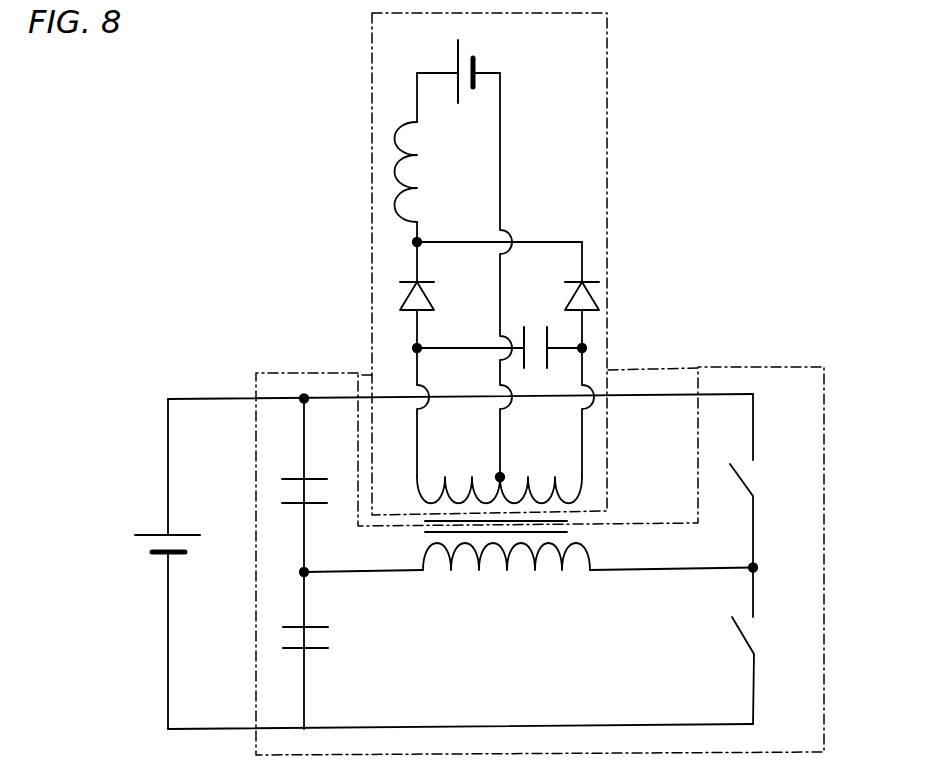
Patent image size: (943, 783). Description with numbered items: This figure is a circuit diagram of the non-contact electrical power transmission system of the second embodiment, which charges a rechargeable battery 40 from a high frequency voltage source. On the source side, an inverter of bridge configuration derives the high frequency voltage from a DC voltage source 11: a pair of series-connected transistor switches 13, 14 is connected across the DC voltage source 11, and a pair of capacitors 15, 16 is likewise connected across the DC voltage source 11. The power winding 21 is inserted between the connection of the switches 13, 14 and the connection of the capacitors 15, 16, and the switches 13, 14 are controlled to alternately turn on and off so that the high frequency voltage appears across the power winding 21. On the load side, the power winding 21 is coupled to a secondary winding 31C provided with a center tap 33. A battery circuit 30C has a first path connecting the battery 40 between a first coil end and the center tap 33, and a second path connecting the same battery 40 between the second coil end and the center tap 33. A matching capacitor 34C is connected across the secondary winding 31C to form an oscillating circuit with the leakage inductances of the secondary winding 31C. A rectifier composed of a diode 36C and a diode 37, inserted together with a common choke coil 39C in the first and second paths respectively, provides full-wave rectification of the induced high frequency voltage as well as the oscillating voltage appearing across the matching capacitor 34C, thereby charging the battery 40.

The DC voltage source 11 is at (138, 546).
The transistor switch 13 is at (755, 475).
The transistor switch 14 is at (755, 633).
The capacitor 15 is at (282, 490).
The capacitor 16 is at (282, 637).
The power winding 21 is at (522, 569).
The battery circuit 30C is at (502, 157).
The secondary winding 31C is at (568, 478).
The center tap 33 is at (497, 473).
The matching capacitor 34C is at (535, 322).
The diode 36C is at (395, 300).
The diode 37 is at (600, 293).
The common choke coil 39C is at (387, 173).
The rechargeable battery 40 is at (463, 48).